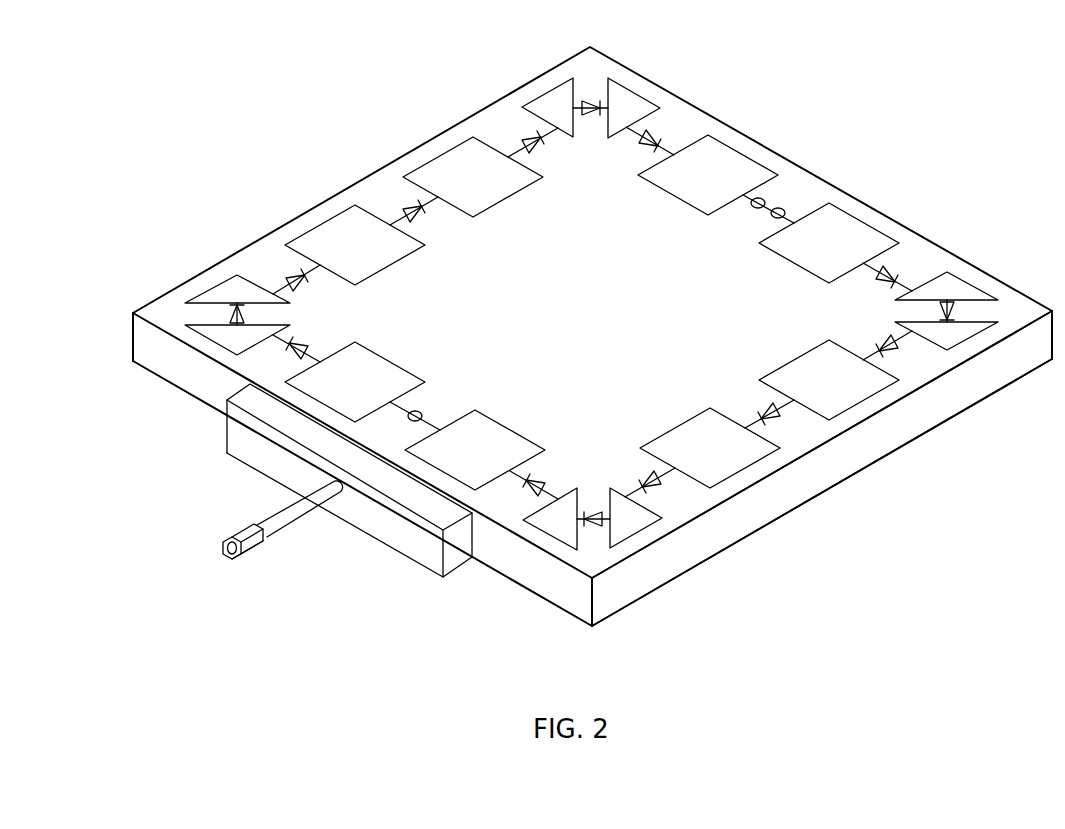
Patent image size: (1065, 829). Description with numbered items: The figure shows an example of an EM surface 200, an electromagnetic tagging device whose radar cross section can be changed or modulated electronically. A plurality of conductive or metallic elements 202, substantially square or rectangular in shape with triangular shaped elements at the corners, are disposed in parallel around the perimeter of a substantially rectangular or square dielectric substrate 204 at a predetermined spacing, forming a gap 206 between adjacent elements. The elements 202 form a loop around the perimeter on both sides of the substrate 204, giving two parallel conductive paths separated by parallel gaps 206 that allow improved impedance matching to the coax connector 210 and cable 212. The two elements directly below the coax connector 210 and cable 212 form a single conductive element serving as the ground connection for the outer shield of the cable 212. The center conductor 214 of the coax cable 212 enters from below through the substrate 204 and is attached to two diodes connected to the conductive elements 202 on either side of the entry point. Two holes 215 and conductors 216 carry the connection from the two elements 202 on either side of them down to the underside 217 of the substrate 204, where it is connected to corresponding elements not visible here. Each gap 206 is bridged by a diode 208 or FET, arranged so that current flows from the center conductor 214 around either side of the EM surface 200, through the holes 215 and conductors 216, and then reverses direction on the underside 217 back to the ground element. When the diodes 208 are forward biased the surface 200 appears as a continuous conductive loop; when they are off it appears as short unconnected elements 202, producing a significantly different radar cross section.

The EM surface 200 is at (592, 336).
The conductive elements 202 is at (333, 227).
The substrate 204 is at (242, 448).
The gap 206 is at (214, 262).
The diode 208 is at (305, 283).
The coax connector 210 is at (228, 530).
The coax cable 212 is at (290, 527).
The center conductor 214 is at (450, 391).
The holes 215 is at (782, 207).
The conductors 216 is at (753, 206).
The underside 217 is at (798, 503).